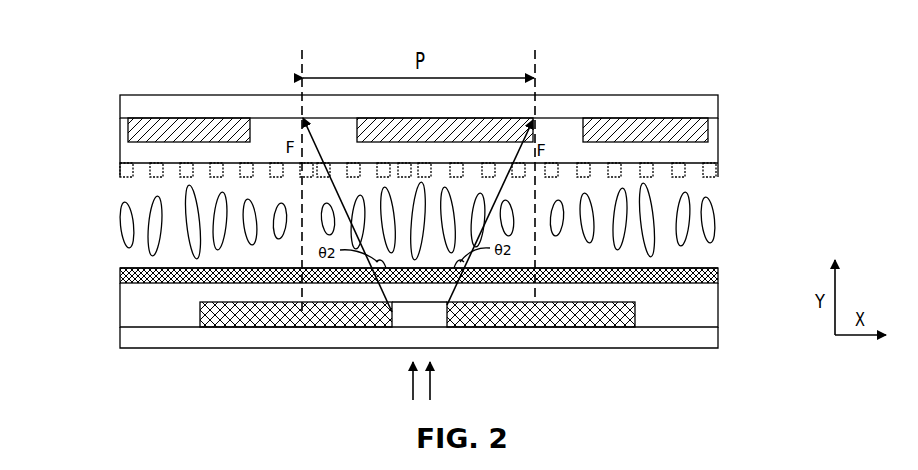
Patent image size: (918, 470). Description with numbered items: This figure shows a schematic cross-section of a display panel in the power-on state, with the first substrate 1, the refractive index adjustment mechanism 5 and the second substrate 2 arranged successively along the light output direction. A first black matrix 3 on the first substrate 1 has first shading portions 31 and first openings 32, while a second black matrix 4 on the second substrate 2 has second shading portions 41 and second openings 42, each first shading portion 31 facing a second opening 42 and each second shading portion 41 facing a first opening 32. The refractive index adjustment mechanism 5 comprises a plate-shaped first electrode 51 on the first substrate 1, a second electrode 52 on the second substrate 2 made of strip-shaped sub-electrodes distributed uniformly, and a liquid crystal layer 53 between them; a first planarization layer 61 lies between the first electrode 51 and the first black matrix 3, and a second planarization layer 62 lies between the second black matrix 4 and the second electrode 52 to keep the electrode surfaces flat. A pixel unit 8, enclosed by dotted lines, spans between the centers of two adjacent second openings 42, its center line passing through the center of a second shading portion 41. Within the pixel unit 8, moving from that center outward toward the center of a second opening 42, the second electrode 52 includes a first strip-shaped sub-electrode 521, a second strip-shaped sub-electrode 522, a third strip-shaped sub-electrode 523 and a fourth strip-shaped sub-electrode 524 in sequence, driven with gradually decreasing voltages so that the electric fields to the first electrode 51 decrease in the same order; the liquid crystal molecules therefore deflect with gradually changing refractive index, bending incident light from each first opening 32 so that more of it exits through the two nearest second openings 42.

The first substrate 1 is at (672, 337).
The second substrate 2 is at (690, 108).
The first black matrix 3 is at (471, 259).
The first shading portion 31 is at (413, 308).
The first opening 32 is at (573, 268).
The second black matrix 4 is at (470, 161).
The second shading portion 41 is at (718, 146).
The second opening 42 is at (537, 135).
The refractive index adjustment mechanism 5 is at (377, 153).
The first electrode 51 is at (385, 276).
The second electrode 52 is at (384, 99).
The first strip-shaped sub-electrode 521 is at (421, 163).
The second strip-shaped sub-electrode 522 is at (454, 163).
The third strip-shaped sub-electrode 523 is at (488, 163).
The fourth strip-shaped sub-electrode 524 is at (519, 163).
The liquid crystal layer 53 is at (127, 225).
The first planarization layer 61 is at (672, 297).
The second planarization layer 62 is at (718, 130).
The pixel unit 8 is at (320, 196).